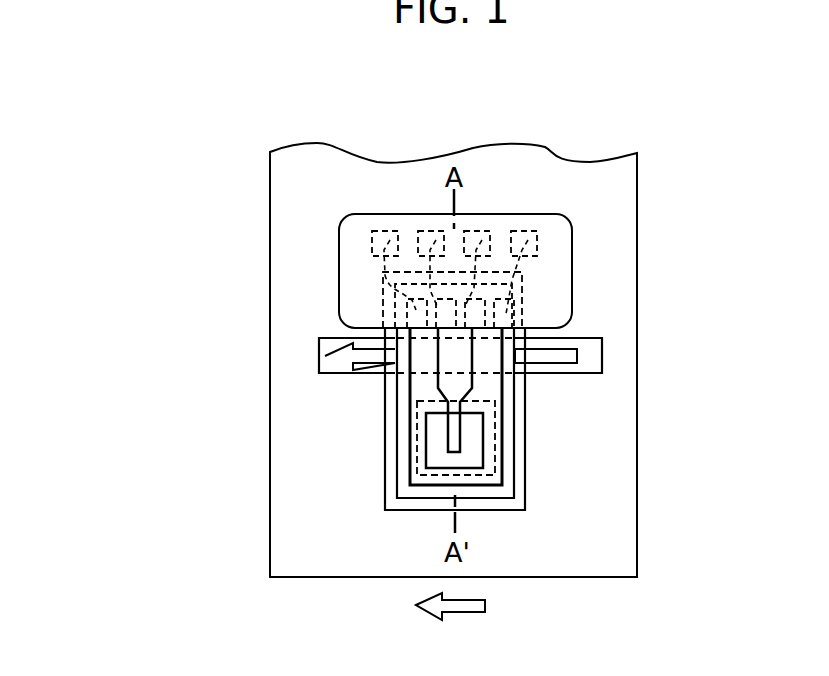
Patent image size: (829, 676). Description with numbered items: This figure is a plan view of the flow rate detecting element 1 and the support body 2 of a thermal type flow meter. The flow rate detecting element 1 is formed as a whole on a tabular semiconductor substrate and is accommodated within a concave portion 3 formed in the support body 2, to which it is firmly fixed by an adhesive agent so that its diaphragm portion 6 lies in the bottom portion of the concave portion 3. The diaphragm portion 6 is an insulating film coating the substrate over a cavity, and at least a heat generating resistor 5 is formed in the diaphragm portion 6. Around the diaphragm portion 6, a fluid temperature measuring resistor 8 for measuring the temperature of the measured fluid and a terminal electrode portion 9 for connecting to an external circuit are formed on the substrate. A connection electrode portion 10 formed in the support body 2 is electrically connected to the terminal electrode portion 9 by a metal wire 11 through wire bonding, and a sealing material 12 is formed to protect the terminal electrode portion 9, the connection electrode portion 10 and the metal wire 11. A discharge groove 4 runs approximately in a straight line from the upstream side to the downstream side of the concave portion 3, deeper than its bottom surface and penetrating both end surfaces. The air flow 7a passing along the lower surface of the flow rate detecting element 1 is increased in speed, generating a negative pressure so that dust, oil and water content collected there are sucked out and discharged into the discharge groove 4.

The flow rate detecting element 1 is at (400, 473).
The support body 2 is at (285, 430).
The concave portion 3 is at (385, 437).
The discharge groove 4 is at (319, 350).
The heat generating resistor 5 is at (461, 430).
The diaphragm portion 6 is at (470, 453).
The air flow 7a is at (560, 355).
The fluid temperature measuring resistor 8 is at (410, 487).
The terminal electrode portion 9 is at (520, 318).
The connection electrode portion 10 is at (524, 241).
The metal wire 11 is at (523, 272).
The sealing material 12 is at (345, 267).